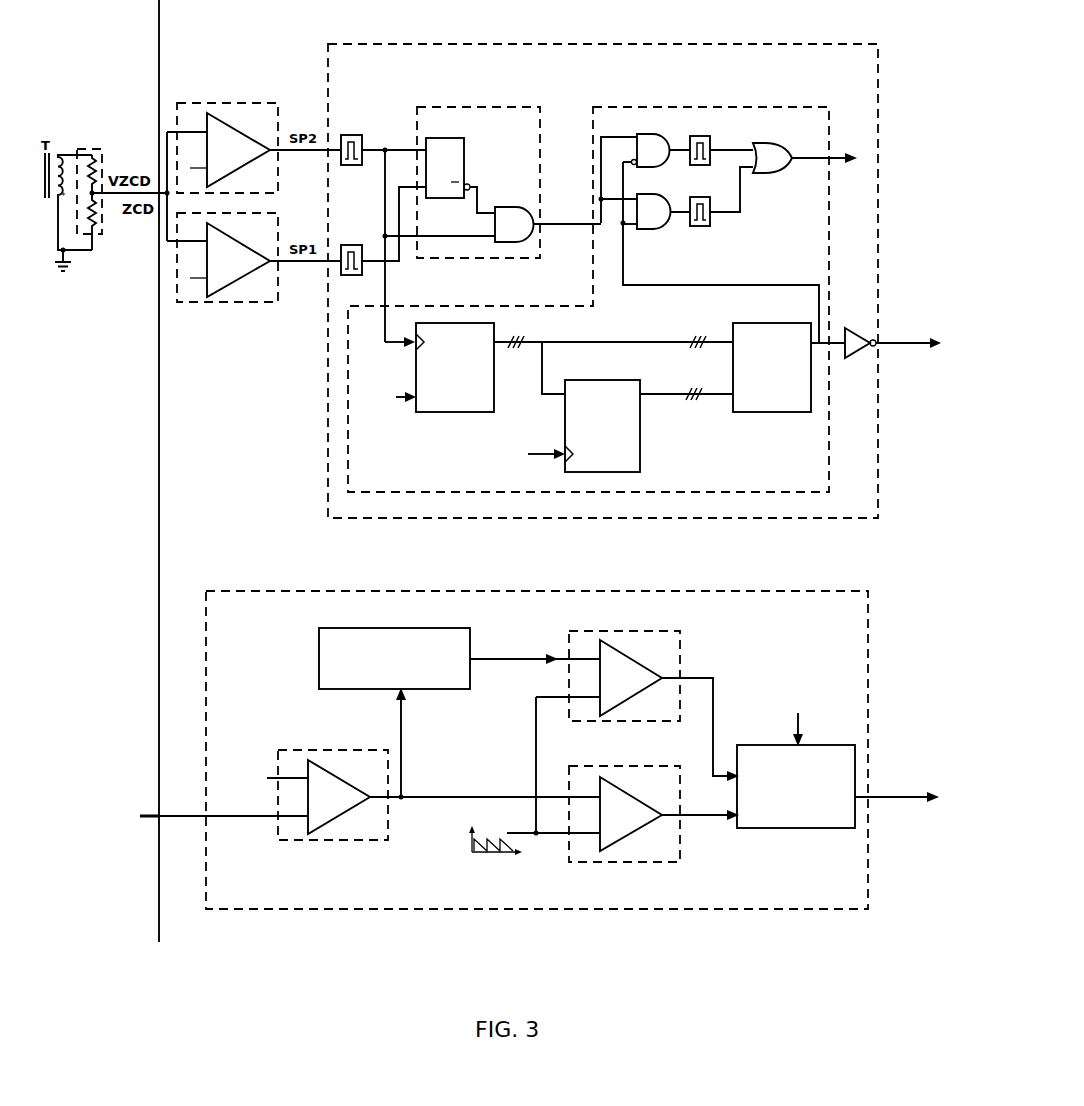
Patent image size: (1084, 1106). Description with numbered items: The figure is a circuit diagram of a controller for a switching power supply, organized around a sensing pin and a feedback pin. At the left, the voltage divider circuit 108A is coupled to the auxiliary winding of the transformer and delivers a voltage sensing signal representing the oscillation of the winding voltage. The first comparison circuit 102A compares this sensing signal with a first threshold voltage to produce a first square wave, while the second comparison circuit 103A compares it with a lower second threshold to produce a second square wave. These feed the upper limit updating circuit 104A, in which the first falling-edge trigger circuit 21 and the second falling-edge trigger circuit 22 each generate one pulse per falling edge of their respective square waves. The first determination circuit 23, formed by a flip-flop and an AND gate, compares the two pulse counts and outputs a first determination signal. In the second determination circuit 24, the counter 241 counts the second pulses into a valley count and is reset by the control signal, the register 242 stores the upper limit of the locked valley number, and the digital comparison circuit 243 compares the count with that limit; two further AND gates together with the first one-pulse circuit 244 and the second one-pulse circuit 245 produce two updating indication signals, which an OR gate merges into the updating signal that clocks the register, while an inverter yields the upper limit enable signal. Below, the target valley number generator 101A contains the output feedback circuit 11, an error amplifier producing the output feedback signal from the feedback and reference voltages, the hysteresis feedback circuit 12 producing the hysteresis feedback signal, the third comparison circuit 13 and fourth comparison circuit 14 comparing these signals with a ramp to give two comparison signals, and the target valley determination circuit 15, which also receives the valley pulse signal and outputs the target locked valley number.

The voltage divider circuit 108A is at (110, 129).
The second comparison circuit 103A is at (263, 90).
The first comparison circuit 102A is at (268, 302).
The upper limit updating circuit 104A is at (673, 34).
The second falling-edge trigger circuit 22 is at (355, 129).
The first falling-edge trigger circuit 21 is at (355, 239).
The first determination circuit 23 is at (498, 107).
The second determination circuit 24 is at (706, 107).
The first one-pulse circuit 244 is at (700, 165).
The second one-pulse circuit 245 is at (700, 226).
The counter 241 is at (459, 412).
The register 242 is at (640, 469).
The digital comparison circuit 243 is at (775, 412).
The target valley number generator 101A is at (596, 591).
The output feedback circuit 11 is at (300, 840).
The hysteresis feedback circuit 12 is at (337, 689).
The fourth comparison circuit 14 is at (590, 721).
The third comparison circuit 13 is at (593, 862).
The target valley determination circuit 15 is at (770, 828).